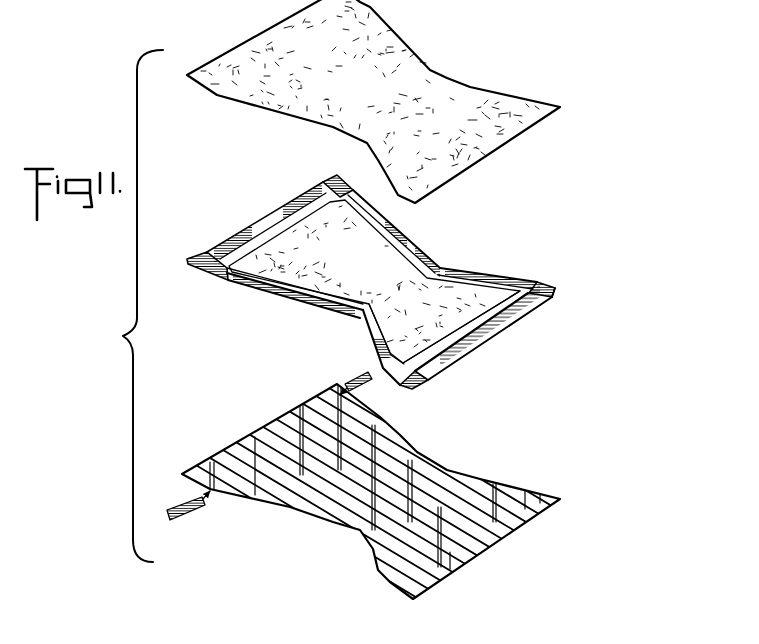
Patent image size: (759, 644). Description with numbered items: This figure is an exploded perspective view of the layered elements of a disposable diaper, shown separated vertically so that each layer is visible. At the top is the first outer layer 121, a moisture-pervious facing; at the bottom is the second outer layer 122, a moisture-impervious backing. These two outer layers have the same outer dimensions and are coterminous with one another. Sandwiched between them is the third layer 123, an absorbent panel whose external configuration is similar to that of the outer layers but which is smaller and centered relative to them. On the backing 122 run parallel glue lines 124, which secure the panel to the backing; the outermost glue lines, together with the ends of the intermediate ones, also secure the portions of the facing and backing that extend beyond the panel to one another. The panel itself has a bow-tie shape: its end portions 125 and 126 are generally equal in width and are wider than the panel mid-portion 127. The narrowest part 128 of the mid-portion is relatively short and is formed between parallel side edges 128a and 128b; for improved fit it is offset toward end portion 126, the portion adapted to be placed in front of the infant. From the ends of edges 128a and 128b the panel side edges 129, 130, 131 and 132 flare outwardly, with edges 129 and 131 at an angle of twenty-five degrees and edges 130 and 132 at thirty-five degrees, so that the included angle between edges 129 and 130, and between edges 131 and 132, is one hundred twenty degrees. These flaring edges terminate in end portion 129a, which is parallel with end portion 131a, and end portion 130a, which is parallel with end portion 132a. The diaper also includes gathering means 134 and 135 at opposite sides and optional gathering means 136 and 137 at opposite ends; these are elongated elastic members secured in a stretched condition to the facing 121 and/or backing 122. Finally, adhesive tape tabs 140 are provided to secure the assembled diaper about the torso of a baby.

The first outer layer 121 is at (392, 97).
The second outer layer 122 is at (393, 494).
The third layer 123 is at (394, 277).
The parallel glue lines 124 is at (478, 503).
The end portion 125 is at (268, 214).
The end portion 126 is at (478, 344).
The panel mid-portion 127 is at (426, 257).
The narrowest part 128 is at (356, 313).
The side edge 128a is at (372, 338).
The side edge 128b is at (450, 267).
The panel side edge 129 is at (283, 289).
The end portion 129a is at (228, 270).
The panel side edge 130 is at (376, 345).
The end portion 130a is at (401, 389).
The panel side edge 131 is at (393, 228).
The end portion 131a is at (349, 178).
The panel side edge 132 is at (519, 275).
The end portion 132a is at (554, 291).
The gathering means 134 is at (307, 310).
The gathering means 135 is at (428, 236).
The gathering means 136 is at (242, 228).
The gathering means 137 is at (523, 320).
The adhesive tape tabs 140 is at (206, 494).